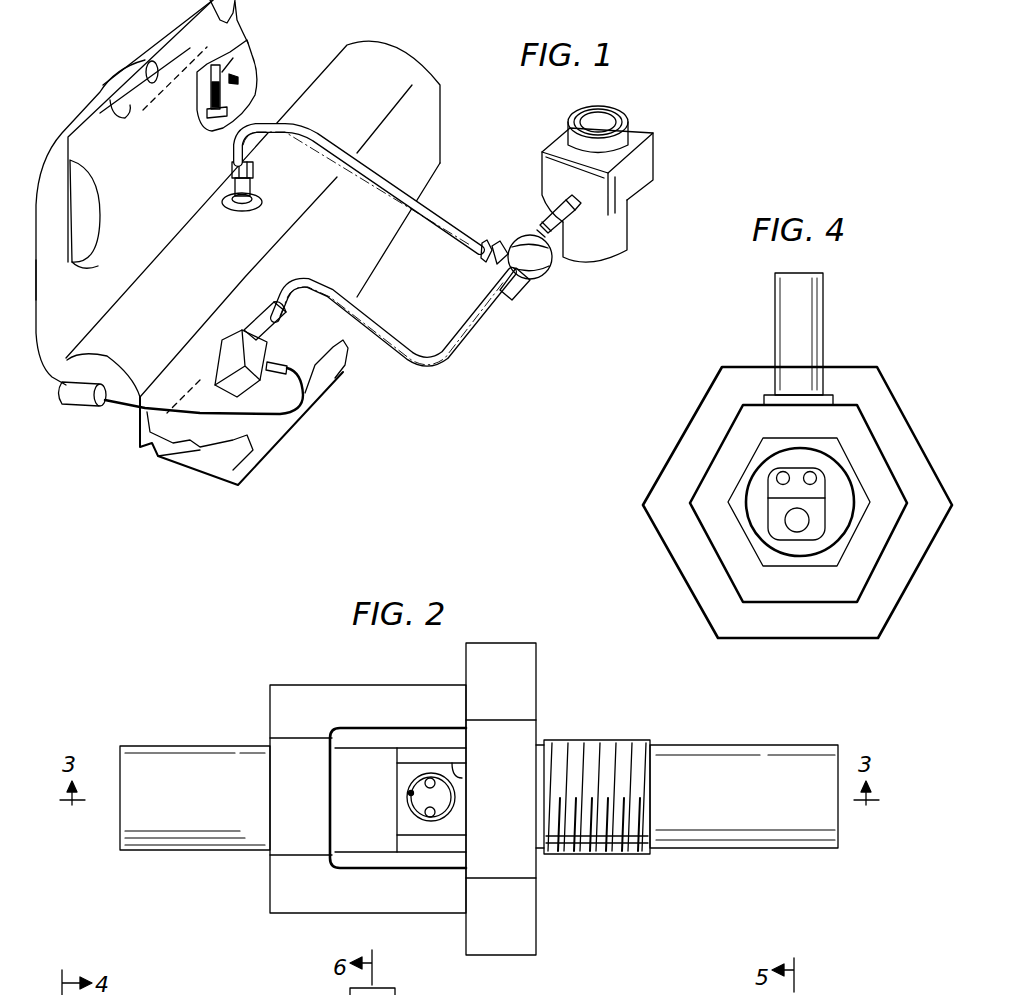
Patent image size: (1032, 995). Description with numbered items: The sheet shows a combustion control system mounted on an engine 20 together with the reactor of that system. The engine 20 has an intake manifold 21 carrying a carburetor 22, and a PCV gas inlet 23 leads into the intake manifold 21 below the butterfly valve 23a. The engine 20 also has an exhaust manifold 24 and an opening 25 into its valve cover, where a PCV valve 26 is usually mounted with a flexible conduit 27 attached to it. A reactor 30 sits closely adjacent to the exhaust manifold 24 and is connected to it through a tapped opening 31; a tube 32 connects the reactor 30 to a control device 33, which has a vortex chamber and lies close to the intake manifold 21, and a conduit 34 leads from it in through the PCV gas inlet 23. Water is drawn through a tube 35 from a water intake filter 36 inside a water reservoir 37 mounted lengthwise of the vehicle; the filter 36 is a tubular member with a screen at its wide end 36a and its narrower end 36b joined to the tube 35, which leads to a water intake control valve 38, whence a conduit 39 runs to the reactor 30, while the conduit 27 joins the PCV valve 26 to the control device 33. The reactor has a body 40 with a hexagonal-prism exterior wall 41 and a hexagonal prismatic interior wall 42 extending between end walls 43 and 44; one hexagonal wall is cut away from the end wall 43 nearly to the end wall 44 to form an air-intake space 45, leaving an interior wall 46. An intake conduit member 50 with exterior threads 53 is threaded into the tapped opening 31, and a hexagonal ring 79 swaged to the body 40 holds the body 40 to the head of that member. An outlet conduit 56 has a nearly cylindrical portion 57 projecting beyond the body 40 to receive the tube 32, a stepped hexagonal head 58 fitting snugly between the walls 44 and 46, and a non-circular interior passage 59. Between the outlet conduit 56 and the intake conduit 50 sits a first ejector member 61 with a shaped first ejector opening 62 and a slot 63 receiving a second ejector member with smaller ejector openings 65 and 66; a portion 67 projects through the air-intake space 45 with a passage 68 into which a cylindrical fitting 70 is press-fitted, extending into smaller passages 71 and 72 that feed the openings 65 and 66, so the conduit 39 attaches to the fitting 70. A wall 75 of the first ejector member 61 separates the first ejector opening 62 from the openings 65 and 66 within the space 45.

In FIG. 1, the engine 20 is at (412, 67).
In FIG. 1, the intake manifold 21 is at (613, 223).
In FIG. 1, the carburetor 22 is at (570, 143).
In FIG. 1, the PCV gas inlet 23 is at (580, 200).
In FIG. 1, the butterfly valve 23a is at (612, 105).
In FIG. 1, the exhaust manifold 24 is at (217, 470).
In FIG. 1, the opening 25 is at (242, 210).
In FIG. 1, the PCV valve 26 is at (250, 187).
In FIG. 1, the conduit 27 is at (427, 200).
In FIG. 1, the reactor 30 is at (265, 350).
In FIG. 4, the reactor 30 is at (648, 428).
In FIG. 2, the reactor 30 is at (200, 680).
In FIG. 1, the tapped opening 31 is at (222, 382).
In FIG. 1, the tube 32 is at (448, 347).
In FIG. 1, the control device 33 is at (530, 277).
In FIG. 1, the conduit 34 is at (547, 218).
In FIG. 1, the tube 35 is at (37, 297).
In FIG. 1, the water intake filter 36 is at (217, 66).
In FIG. 1, the wide end 36a is at (240, 97).
In FIG. 1, the narrower end 36b is at (233, 58).
In FIG. 1, the water reservoir 37 is at (129, 198).
In FIG. 1, the water intake control valve 38 is at (80, 410).
In FIG. 1, the conduit 39 is at (207, 417).
In FIG. 4, the body 40 is at (850, 580).
In FIG. 2, the body 40 is at (280, 880).
In FIG. 4, the hexagonal-prism exterior wall 41 is at (811, 600).
In FIG. 2, the hexagonal-prism exterior wall 41 is at (395, 918).
In FIG. 4, the prismatic interior wall 42 is at (840, 548).
In FIG. 2, the prismatic interior wall 42 is at (385, 735).
In FIG. 2, the end wall 43 is at (466, 700).
In FIG. 4, the end wall 44 is at (775, 591).
In FIG. 2, the end wall 44 is at (270, 712).
In FIG. 2, the air-intake space 45 is at (422, 738).
In FIG. 2, the interior wall 46 is at (335, 766).
In FIG. 2, the intake conduit member 50 is at (735, 760).
In FIG. 2, the exterior threads 53 is at (607, 755).
In FIG. 4, the outlet conduit 56 is at (762, 493).
In FIG. 2, the outlet conduit 56 is at (178, 762).
In FIG. 2, the nearly cylindrical portion 57 is at (125, 822).
In FIG. 4, the stepped hexagonal head 58 is at (812, 440).
In FIG. 2, the stepped hexagonal head 58 is at (312, 812).
In FIG. 4, the interior passage 59 is at (818, 505).
In FIG. 2, the first ejector member 61 is at (426, 850).
In FIG. 4, the first ejector opening 62 is at (793, 522).
In FIG. 2, the slot 63 is at (458, 775).
In FIG. 4, the ejector opening 65 is at (814, 470).
In FIG. 4, the ejector opening 66 is at (779, 470).
In FIG. 2, the portion 67 is at (457, 797).
In FIG. 2, the passage 68 is at (410, 797).
In FIG. 2, the cylindrical fitting 70 is at (425, 810).
In FIG. 2, the passage 71 is at (424, 782).
In FIG. 2, the passage 72 is at (452, 812).
In FIG. 4, the wall 75 is at (785, 493).
In FIG. 2, the wall 75 is at (348, 758).
In FIG. 4, the hexagonal ring 79 is at (720, 393).
In FIG. 2, the hexagonal ring 79 is at (528, 660).